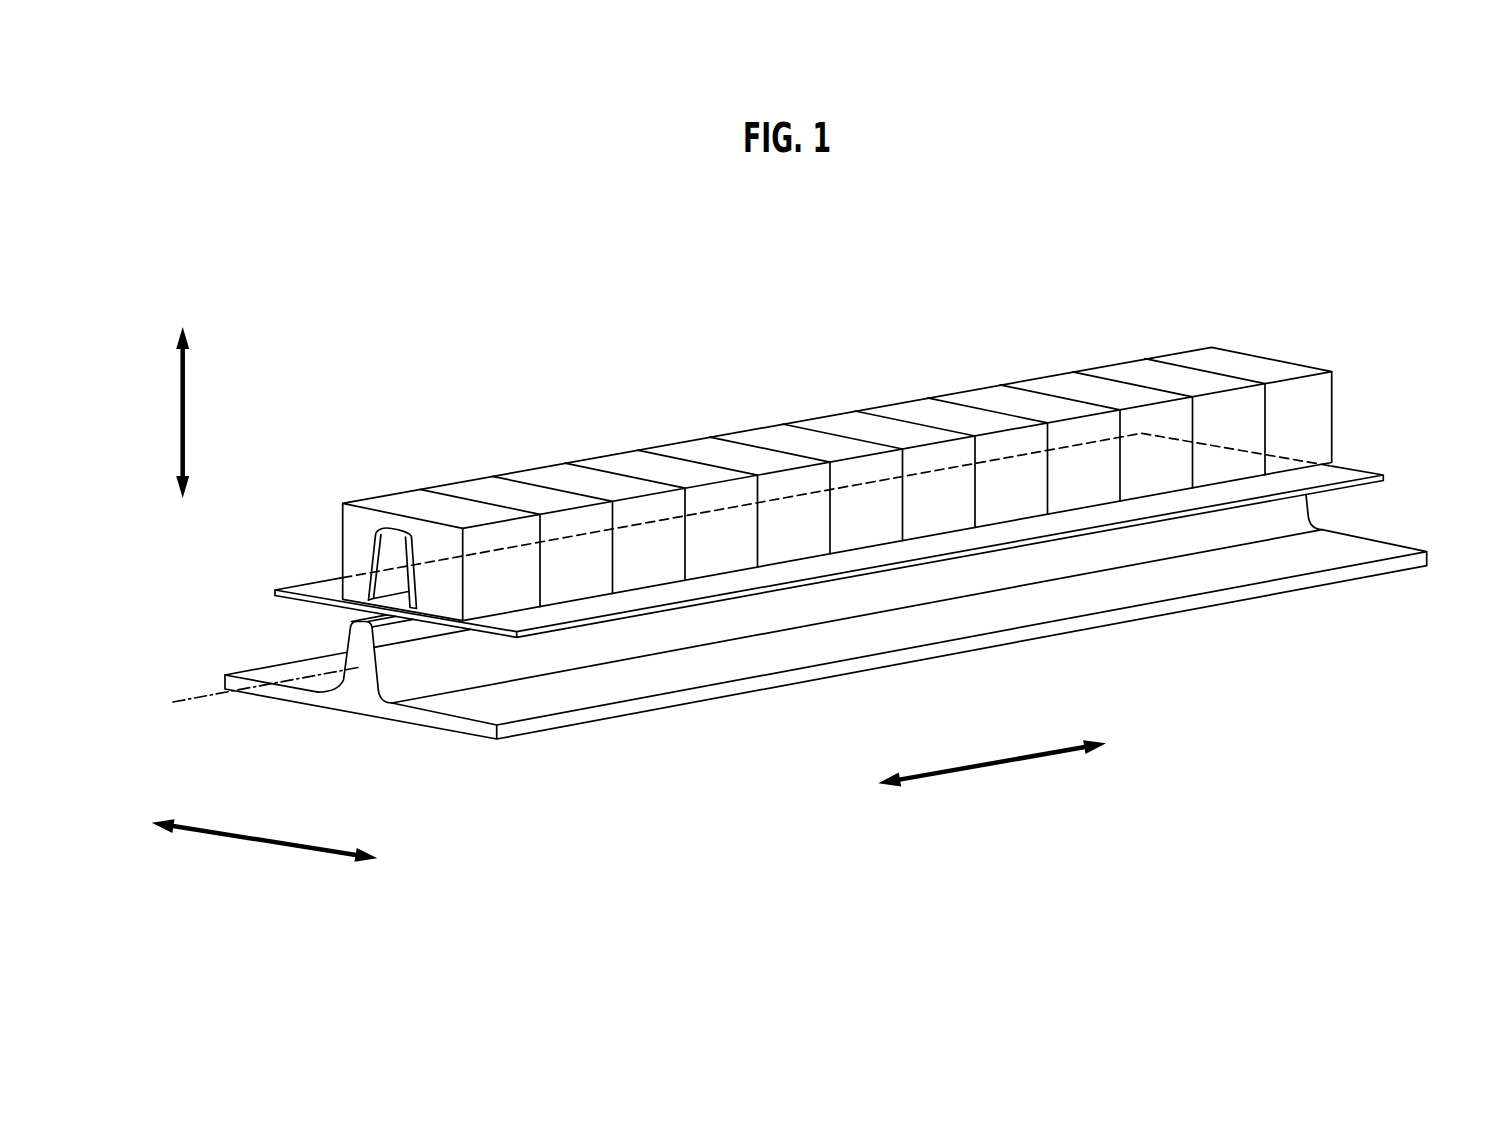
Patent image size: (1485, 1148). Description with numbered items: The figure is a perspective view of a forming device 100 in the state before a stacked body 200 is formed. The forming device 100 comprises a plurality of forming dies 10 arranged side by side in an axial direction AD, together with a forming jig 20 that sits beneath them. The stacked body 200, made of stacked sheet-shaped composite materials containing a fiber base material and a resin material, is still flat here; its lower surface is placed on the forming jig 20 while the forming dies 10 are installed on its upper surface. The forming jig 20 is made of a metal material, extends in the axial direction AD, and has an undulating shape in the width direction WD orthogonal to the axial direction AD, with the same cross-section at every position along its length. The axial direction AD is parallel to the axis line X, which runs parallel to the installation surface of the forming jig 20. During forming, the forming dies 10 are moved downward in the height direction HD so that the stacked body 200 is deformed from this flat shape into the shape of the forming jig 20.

The forming device 100 is at (401, 321).
The forming die 10 is at (1187, 355).
The stacked body 200 is at (297, 587).
The forming jig 20 is at (527, 727).
The axis line X is at (200, 708).
The height direction HD is at (164, 412).
The width direction WD is at (265, 850).
The axial direction AD is at (992, 772).